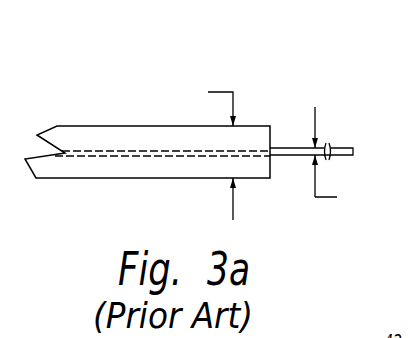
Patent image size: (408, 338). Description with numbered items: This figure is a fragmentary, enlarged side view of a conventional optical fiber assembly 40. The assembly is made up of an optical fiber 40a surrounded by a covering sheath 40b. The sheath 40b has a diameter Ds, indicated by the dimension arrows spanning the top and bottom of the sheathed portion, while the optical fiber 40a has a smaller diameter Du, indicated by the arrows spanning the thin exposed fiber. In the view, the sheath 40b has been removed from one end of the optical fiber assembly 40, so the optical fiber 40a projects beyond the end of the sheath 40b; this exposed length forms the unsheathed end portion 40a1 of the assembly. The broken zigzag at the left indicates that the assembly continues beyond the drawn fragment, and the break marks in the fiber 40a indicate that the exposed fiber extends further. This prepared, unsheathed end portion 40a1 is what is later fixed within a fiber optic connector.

The optical fiber assembly 40 is at (148, 37).
The sheath 40b is at (76, 127).
The optical fiber 40a is at (288, 155).
The unsheathed end portion 40a1 is at (294, 148).
The sheath diameter Ds is at (208, 149).
The optical fiber diameter Du is at (341, 159).